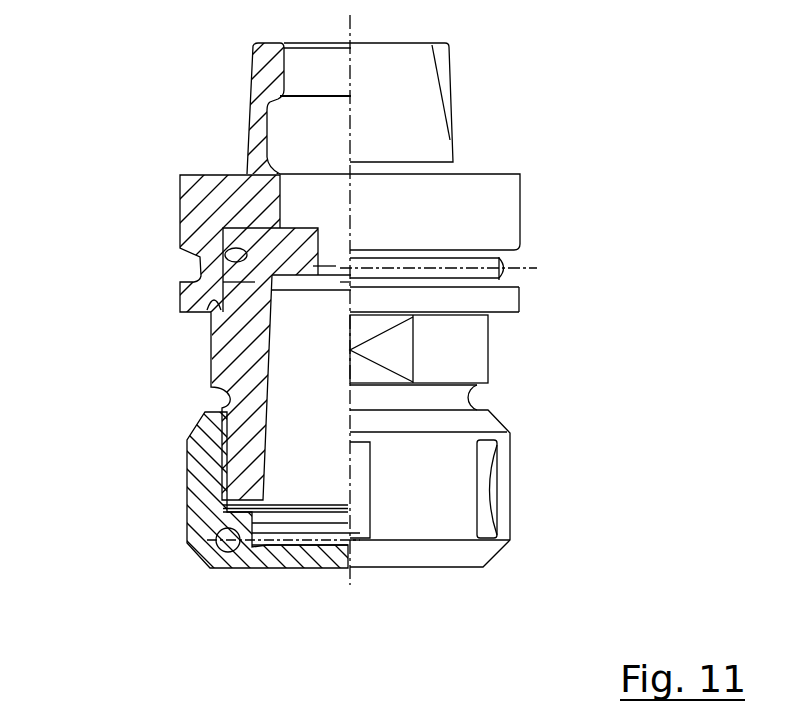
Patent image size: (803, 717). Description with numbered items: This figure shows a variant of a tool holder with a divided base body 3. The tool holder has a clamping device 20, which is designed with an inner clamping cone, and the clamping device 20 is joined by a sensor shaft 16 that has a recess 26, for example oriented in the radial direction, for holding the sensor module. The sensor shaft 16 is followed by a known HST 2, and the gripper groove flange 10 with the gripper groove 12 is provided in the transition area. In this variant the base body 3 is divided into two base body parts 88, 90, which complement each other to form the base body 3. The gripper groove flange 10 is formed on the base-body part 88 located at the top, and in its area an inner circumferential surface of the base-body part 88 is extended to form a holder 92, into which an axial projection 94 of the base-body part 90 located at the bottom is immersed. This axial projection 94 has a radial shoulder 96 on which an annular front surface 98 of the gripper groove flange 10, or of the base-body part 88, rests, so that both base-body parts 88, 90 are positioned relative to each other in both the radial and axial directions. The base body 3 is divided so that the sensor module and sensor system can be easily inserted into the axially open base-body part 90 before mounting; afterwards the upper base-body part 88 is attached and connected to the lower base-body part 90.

The HST 2 is at (478, 100).
The base body 3 is at (532, 208).
The gripper groove flange 10 is at (503, 235).
The gripper groove 12 is at (503, 277).
The sensor shaft 16 is at (475, 357).
The clamping device 20 is at (520, 490).
The recess 26 is at (290, 414).
The base-body part 88 is at (195, 193).
The base-body part 90 is at (223, 343).
The holder 92 is at (180, 248).
The axial projection 94 is at (200, 279).
The radial shoulder 96 is at (207, 311).
The annular front surface 98 is at (255, 283).